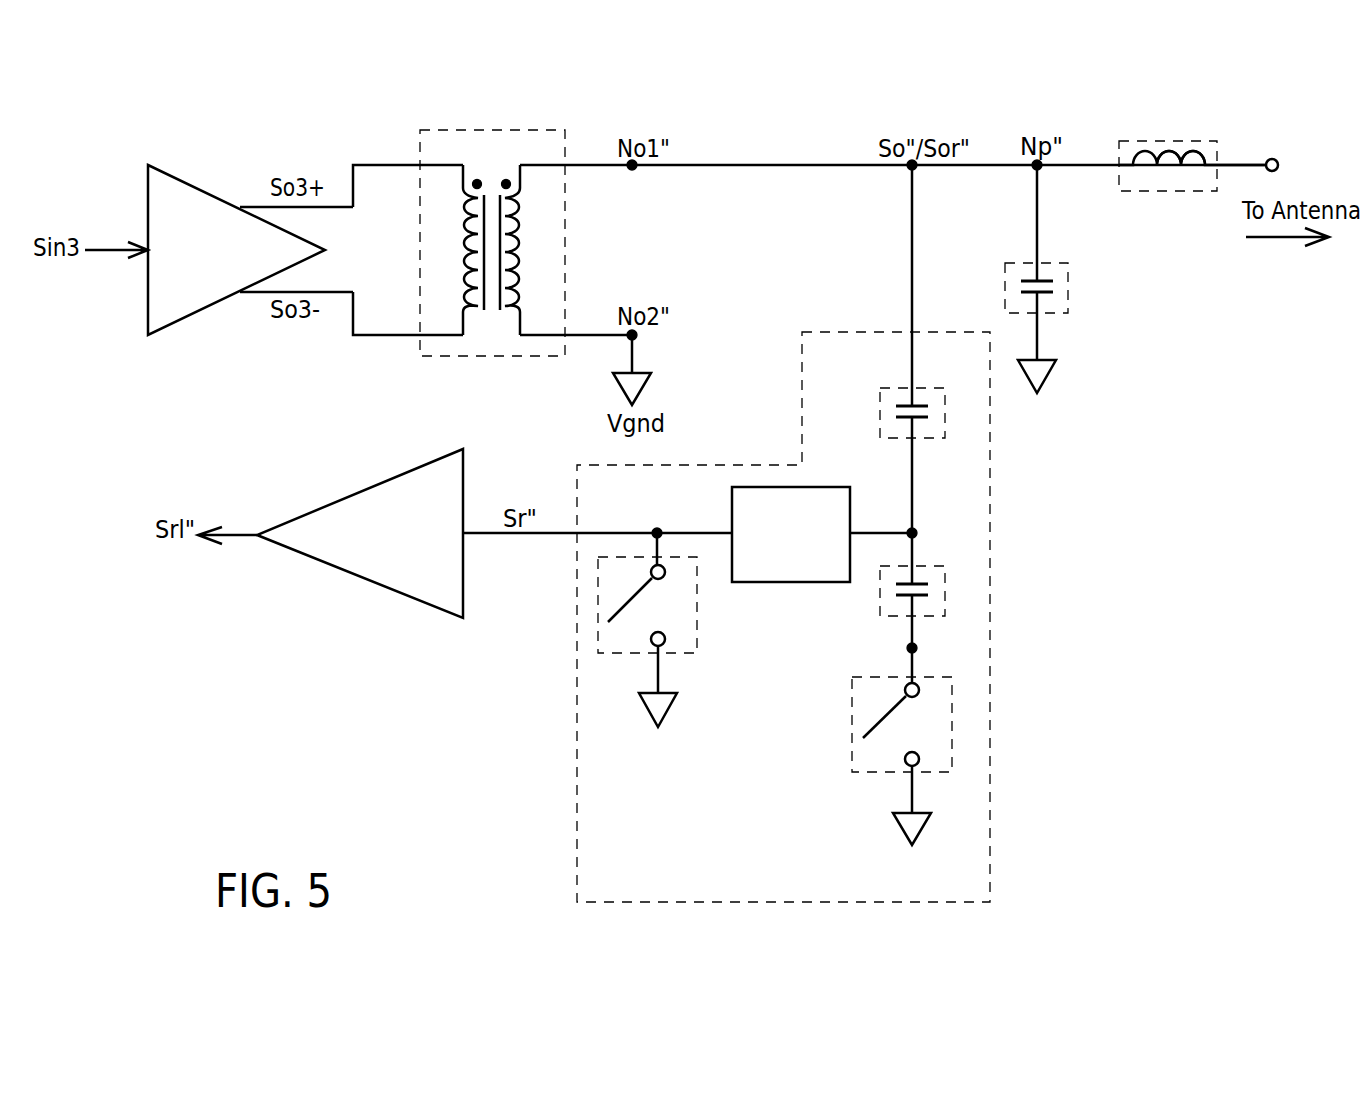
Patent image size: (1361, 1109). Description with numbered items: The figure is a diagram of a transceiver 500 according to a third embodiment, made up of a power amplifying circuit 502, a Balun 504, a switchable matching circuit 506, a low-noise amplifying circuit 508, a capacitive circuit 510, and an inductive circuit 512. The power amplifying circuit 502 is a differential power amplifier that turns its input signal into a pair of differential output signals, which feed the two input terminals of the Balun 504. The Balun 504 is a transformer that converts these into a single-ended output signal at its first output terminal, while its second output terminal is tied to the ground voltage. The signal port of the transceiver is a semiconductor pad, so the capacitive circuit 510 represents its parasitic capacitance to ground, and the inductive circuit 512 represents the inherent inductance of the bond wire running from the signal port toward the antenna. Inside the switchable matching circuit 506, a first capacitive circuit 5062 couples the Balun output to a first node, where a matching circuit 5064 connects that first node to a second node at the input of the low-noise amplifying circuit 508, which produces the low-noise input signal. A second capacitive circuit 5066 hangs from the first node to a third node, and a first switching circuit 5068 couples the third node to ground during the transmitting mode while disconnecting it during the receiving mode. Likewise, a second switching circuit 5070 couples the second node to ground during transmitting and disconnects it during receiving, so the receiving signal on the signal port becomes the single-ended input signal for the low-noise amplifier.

The transceiver 500 is at (1175, 496).
The power amplifying circuit 502 is at (188, 183).
The Balun 504 is at (540, 131).
The switchable matching circuit 506 is at (852, 326).
The low-noise amplifying circuit 508 is at (465, 470).
The capacitive circuit 510 is at (1060, 263).
The inductive circuit 512 is at (1195, 141).
The first capacitive circuit 5062 is at (903, 388).
The matching circuit 5064 is at (777, 582).
The second capacitive circuit 5066 is at (945, 592).
The first switching circuit 5068 is at (952, 730).
The second switching circuit 5070 is at (598, 612).